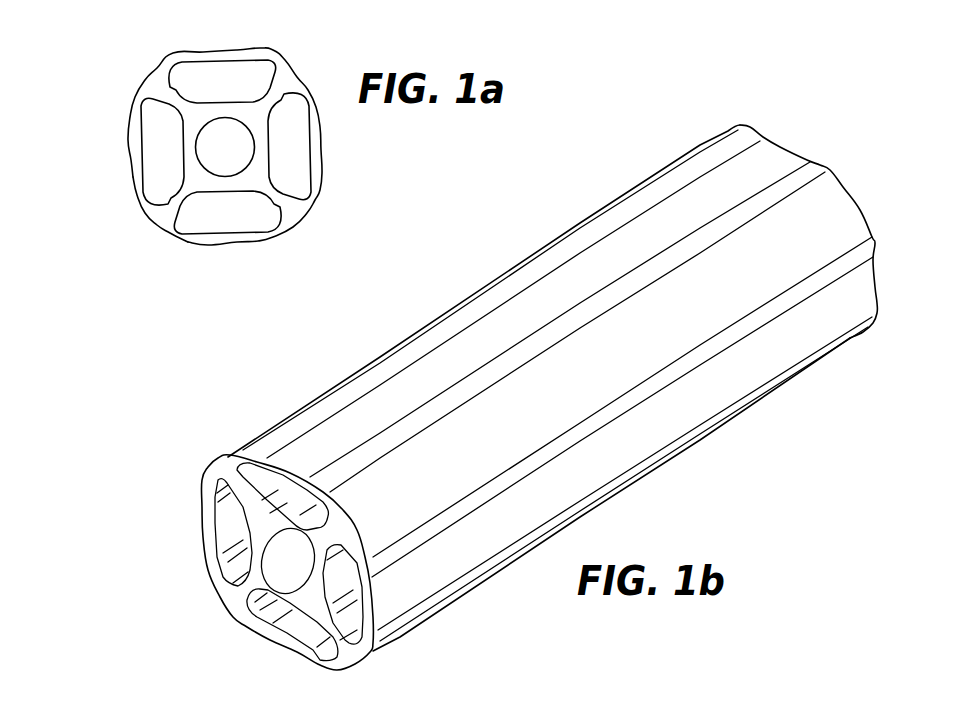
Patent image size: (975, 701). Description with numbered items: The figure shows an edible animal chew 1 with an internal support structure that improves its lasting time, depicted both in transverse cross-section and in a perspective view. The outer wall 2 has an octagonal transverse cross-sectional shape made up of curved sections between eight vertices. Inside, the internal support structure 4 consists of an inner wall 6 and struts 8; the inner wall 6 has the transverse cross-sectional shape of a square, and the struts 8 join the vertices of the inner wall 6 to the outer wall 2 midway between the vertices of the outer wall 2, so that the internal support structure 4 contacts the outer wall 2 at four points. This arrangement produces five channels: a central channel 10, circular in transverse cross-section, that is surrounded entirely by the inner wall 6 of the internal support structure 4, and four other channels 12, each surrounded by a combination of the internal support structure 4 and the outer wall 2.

In FIG. 1A, the animal chew 1 is at (125, 84).
In FIG. 1B, the animal chew 1 is at (683, 128).
In FIG. 1A, the outer wall 2 is at (219, 58).
In FIG. 1B, the outer wall 2 is at (506, 290).
In FIG. 1A, the internal support structure 4 is at (278, 88).
In FIG. 1B, the internal support structure 4 is at (243, 590).
In FIG. 1A, the inner wall 6 is at (193, 147).
In FIG. 1A, the struts 8 is at (173, 211).
In FIG. 1A, the channel 10 is at (247, 148).
In FIG. 1A, the channels 12 is at (222, 216).